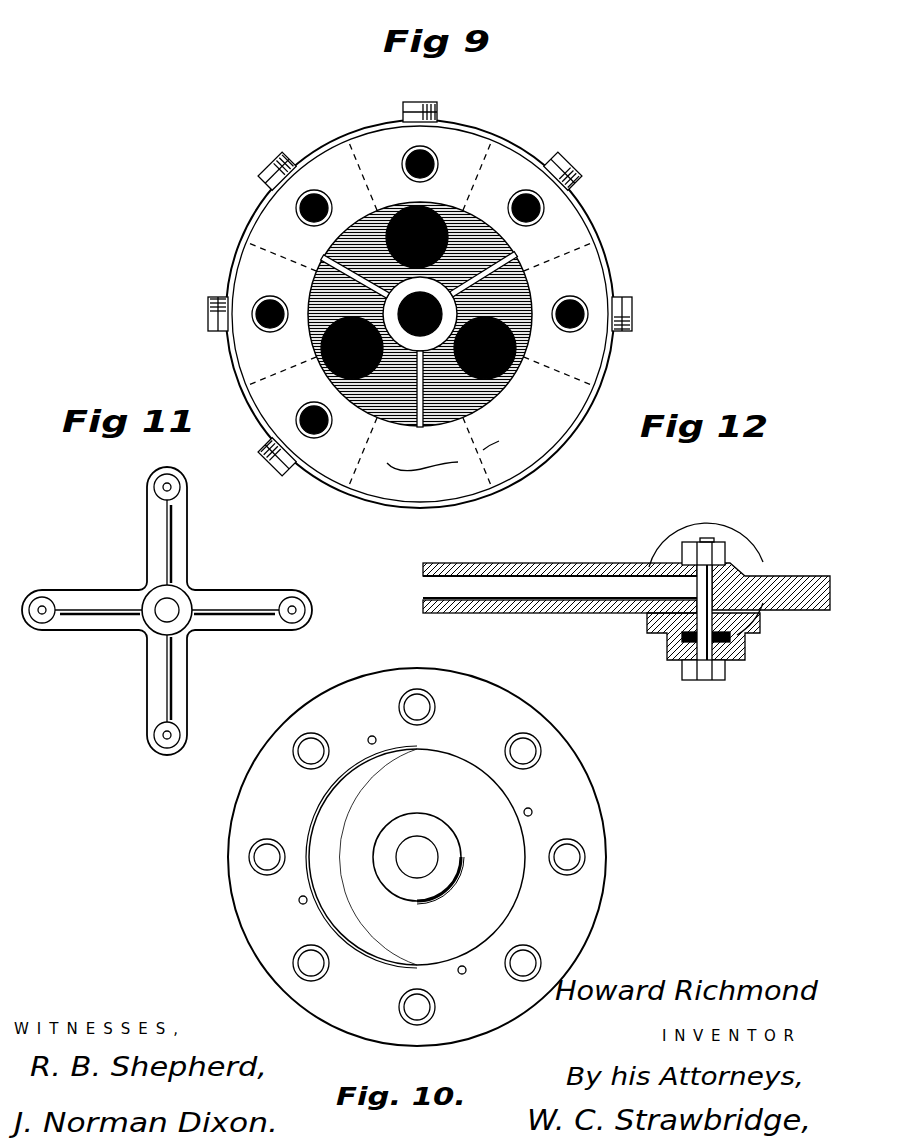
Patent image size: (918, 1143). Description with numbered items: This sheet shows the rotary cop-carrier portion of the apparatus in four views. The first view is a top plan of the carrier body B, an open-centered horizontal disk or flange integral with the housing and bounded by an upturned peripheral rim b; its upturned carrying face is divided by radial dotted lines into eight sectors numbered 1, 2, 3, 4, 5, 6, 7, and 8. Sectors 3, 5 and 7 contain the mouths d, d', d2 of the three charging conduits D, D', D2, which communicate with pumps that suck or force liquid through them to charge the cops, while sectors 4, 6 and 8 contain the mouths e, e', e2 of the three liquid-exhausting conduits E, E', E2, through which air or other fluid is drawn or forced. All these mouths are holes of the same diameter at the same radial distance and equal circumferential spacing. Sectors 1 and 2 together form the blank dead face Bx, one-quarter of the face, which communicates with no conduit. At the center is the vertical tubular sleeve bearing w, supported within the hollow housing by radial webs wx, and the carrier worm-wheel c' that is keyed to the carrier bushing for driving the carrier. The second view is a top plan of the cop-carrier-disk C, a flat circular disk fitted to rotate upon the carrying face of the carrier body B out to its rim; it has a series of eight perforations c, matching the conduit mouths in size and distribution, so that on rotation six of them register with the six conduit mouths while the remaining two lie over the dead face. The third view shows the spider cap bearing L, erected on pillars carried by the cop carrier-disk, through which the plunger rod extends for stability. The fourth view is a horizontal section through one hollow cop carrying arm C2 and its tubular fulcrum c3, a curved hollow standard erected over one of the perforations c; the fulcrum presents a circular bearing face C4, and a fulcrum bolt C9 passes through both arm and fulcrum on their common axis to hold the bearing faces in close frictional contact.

In FIG. 9, the upturned peripheral rim b is at (330, 142).
In FIG. 9, the carrier body B is at (227, 198).
In FIG. 9, the tubular sleeve bearing w is at (420, 314).
In FIG. 9, the radial webs wx is at (516, 254).
In FIG. 9, the carrier worm-wheel c' is at (418, 301).
In FIG. 10, the carrier worm-wheel c' is at (418, 858).
In FIG. 9, the sector 1 is at (558, 383).
In FIG. 9, the sector 2 is at (477, 458).
In FIG. 9, the sector 3 is at (350, 452).
In FIG. 9, the sector 4 is at (281, 365).
In FIG. 9, the sector 5 is at (281, 248).
In FIG. 9, the sector 6 is at (366, 175).
In FIG. 9, the sector 7 is at (480, 175).
In FIG. 9, the sector 8 is at (558, 261).
In FIG. 9, the dead face Bx is at (443, 455).
In FIG. 9, the mouth of liquid-exhausting conduit e is at (273, 321).
In FIG. 9, the mouth of liquid-exhausting conduit e' is at (430, 164).
In FIG. 9, the mouth of liquid-exhausting conduit e2 is at (578, 326).
In FIG. 9, the mouth of charging conduit d is at (323, 422).
In FIG. 9, the mouth of charging conduit d' is at (325, 208).
In FIG. 9, the mouth of charging conduit d2 is at (540, 211).
In FIG. 9, the liquid-exhausting conduit E is at (205, 313).
In FIG. 9, the liquid-exhausting conduit E' is at (432, 102).
In FIG. 9, the liquid-exhausting conduit E2 is at (633, 316).
In FIG. 9, the charging conduit D is at (267, 463).
In FIG. 9, the charging conduit D' is at (266, 168).
In FIG. 9, the charging conduit D2 is at (572, 172).
In FIG. 11, the spider cap bearing L is at (218, 603).
In FIG. 10, the cop-carrier-disk C is at (417, 857).
In FIG. 10, the perforations c is at (413, 851).
In FIG. 12, the cop carrying arm C2 is at (581, 563).
In FIG. 12, the tubular fulcrum c3 is at (760, 668).
In FIG. 12, the fulcrum bolt C9 is at (710, 540).
In FIG. 12, the circular bearing face C4 is at (700, 680).